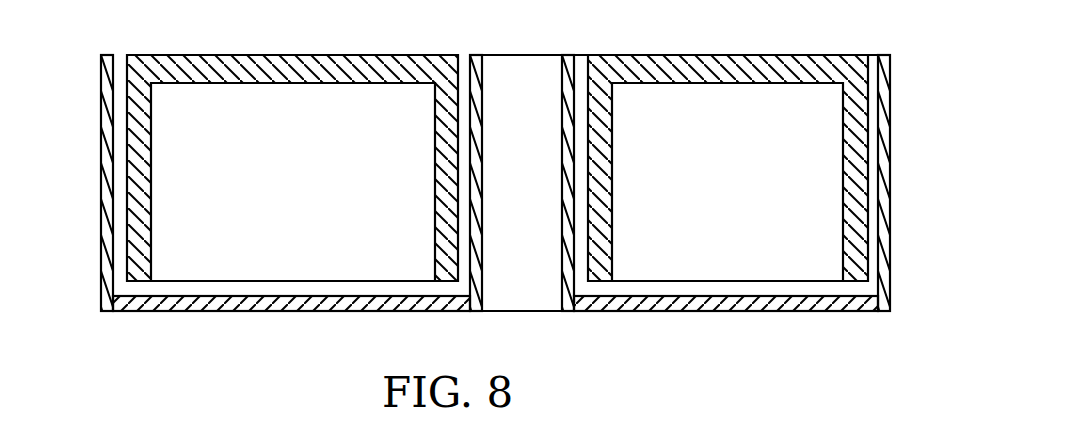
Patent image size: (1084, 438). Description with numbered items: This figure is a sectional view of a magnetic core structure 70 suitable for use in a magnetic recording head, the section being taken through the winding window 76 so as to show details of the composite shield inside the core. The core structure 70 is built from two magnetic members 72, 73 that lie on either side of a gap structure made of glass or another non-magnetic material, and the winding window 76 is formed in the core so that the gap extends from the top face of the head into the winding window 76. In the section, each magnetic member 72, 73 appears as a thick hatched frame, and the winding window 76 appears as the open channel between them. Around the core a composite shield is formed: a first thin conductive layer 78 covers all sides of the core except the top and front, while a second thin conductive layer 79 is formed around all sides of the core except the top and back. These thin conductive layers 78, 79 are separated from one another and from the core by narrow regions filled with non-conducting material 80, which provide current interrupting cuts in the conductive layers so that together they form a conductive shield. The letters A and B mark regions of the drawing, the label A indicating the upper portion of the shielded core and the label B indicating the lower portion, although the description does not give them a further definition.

The magnetic core structure 70 is at (483, 195).
The magnetic member 72 is at (169, 233).
The magnetic member 73 is at (826, 190).
The winding window 76 is at (520, 78).
The first thin conductive layer 78 is at (483, 147).
The second thin conductive layer 79 is at (328, 313).
The non-conducting material 80 is at (465, 62).
The region A is at (728, 55).
The region B is at (677, 310).